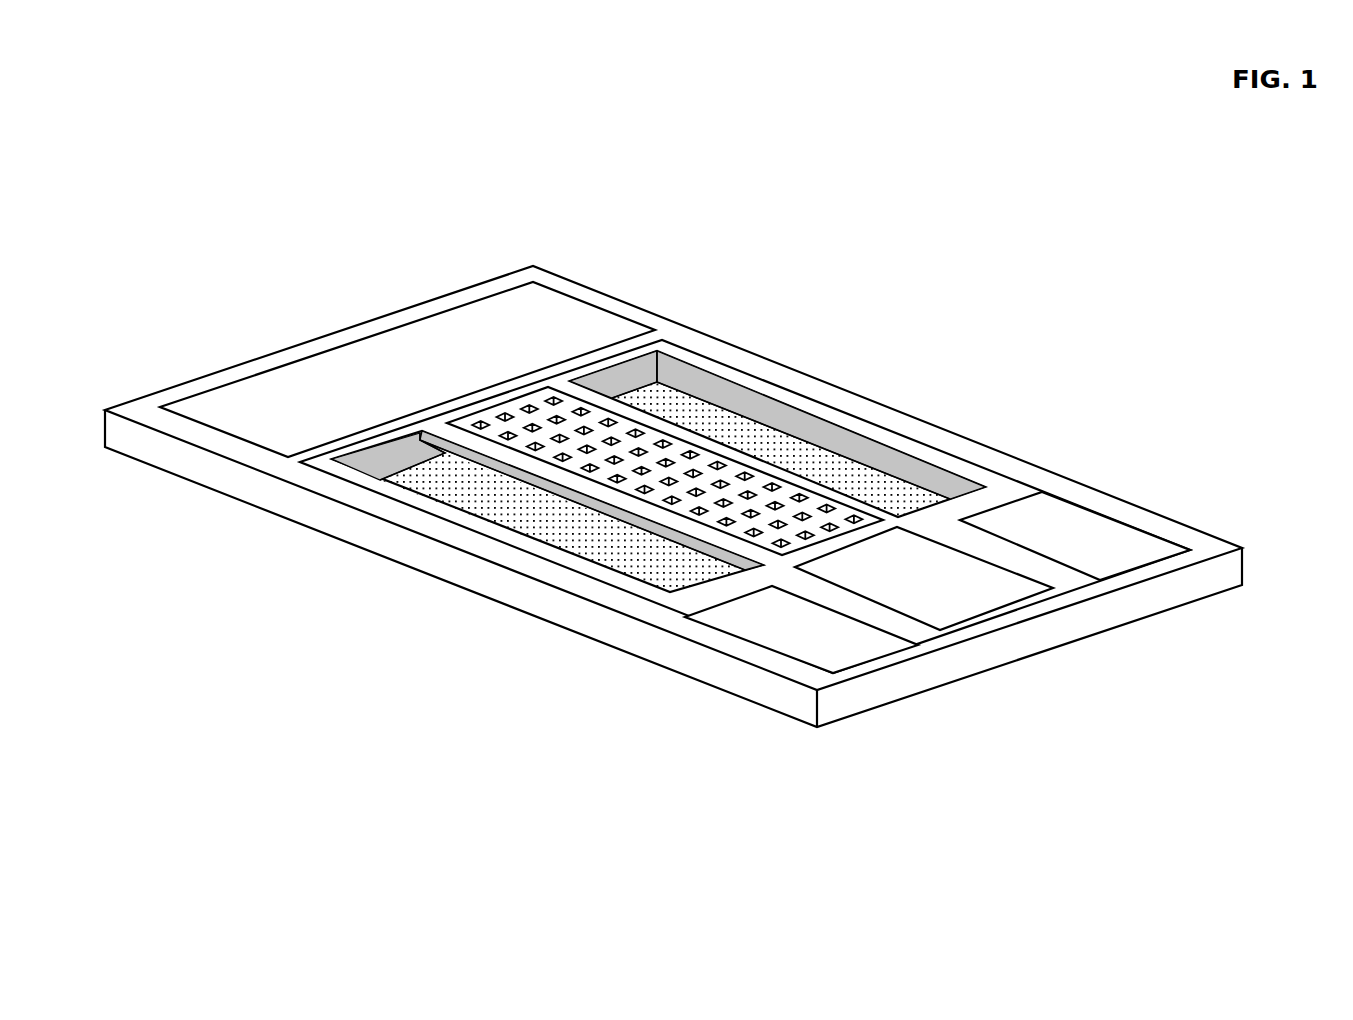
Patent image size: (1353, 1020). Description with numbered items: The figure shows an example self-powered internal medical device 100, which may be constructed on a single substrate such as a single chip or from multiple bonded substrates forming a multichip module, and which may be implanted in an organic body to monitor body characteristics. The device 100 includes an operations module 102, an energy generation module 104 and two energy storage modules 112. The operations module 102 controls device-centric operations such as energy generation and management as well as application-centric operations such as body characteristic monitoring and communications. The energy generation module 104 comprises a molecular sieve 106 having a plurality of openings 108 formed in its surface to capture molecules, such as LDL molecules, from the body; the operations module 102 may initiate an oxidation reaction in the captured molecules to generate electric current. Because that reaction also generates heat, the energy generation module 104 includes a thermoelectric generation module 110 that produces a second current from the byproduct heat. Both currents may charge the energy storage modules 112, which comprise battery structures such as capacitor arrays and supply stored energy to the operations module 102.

The device 100 is at (199, 264).
The operations module 102 is at (463, 415).
The energy generation module 104 is at (458, 530).
The molecular sieve 106 is at (397, 409).
The openings 108 is at (547, 400).
The thermoelectric generation module 110 is at (941, 583).
The energy storage modules 112 is at (1084, 541).